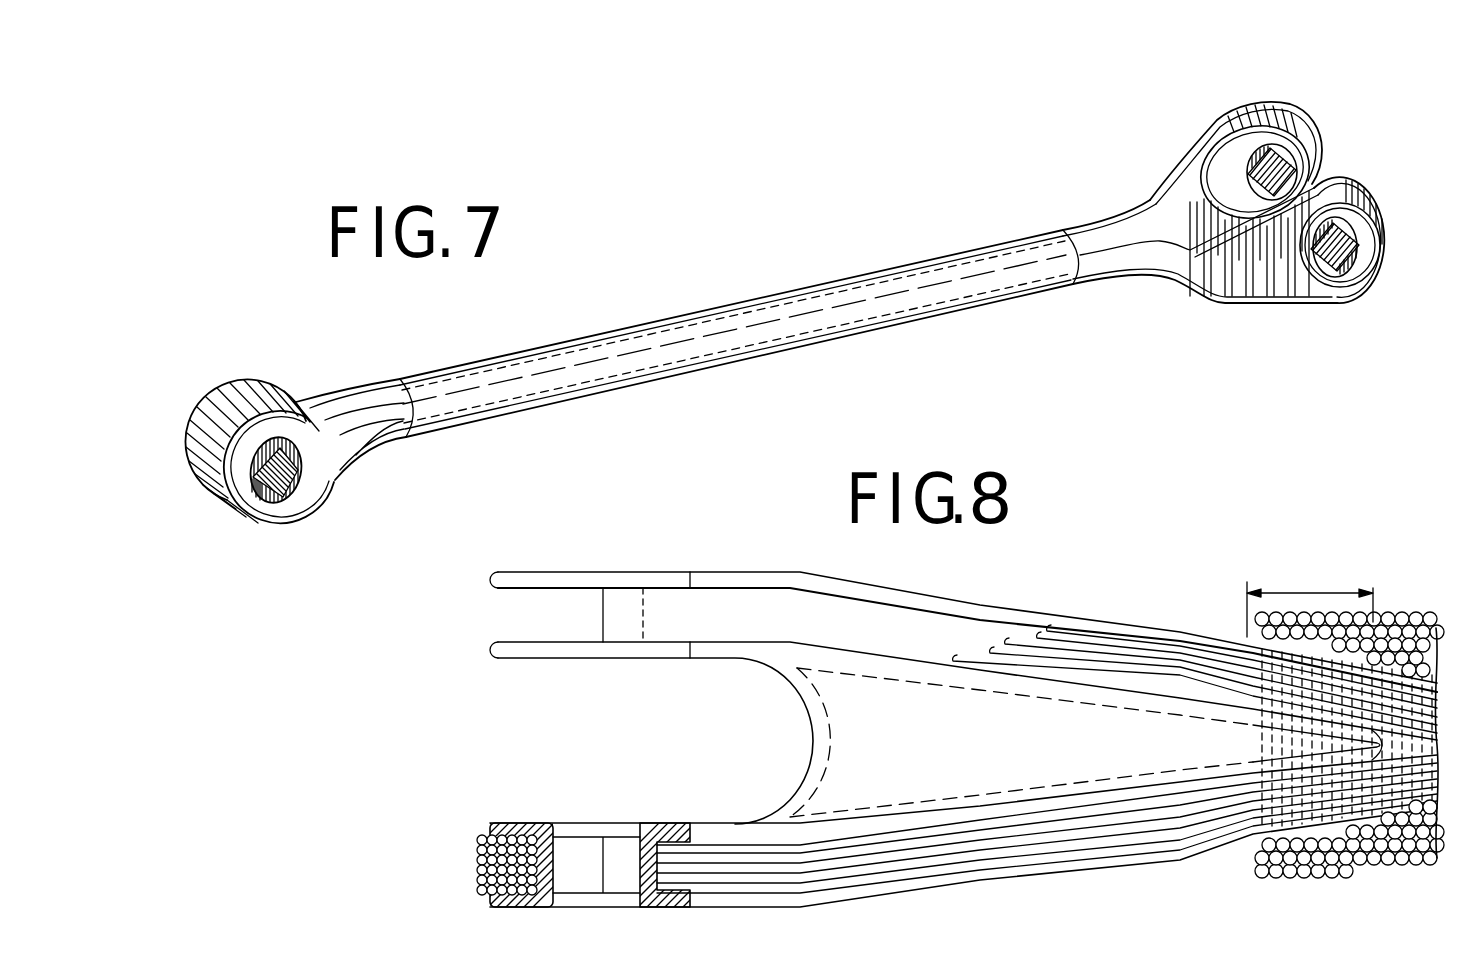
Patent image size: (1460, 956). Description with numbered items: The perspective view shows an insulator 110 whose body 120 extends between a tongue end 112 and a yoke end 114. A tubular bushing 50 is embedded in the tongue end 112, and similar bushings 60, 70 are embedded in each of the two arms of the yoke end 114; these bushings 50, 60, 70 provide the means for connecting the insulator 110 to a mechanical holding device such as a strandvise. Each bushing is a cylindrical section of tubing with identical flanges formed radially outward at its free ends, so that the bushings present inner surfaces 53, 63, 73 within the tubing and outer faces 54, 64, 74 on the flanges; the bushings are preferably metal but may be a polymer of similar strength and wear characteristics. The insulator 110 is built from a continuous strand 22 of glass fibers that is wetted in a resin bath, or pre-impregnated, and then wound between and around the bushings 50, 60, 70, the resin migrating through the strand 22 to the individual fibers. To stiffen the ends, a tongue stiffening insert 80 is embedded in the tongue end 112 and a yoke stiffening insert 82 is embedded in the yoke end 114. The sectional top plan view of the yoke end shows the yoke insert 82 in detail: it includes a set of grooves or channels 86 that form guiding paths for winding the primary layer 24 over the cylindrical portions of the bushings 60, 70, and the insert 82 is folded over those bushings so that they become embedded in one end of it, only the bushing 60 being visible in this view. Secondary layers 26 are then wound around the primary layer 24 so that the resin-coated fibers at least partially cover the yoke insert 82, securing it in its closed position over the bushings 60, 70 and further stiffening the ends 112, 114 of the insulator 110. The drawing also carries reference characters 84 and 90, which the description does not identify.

In FIG. 7, the insulator 110 is at (636, 292).
In FIG. 7, the tongue end 112 is at (213, 451).
In FIG. 7, the yoke end 114 is at (1296, 196).
In FIG. 7, the tongue stiffening insert 80 is at (355, 380).
In FIG. 7, the yoke stiffening insert 82 is at (1127, 194).
In FIG. 8, the yoke stiffening insert 82 is at (921, 740).
In FIG. 7, the shaft 84 is at (739, 347).
In FIG. 7, the body 120 is at (742, 288).
In FIG. 7, the bushing 50 is at (290, 439).
In FIG. 7, the inner surface 53 is at (266, 494).
In FIG. 7, the outer face 54 is at (280, 440).
In FIG. 7, the bushing 60 is at (1371, 257).
In FIG. 8, the bushing 60 is at (545, 905).
In FIG. 7, the inner surface 63 is at (1348, 233).
In FIG. 7, the outer face 64 is at (1326, 278).
In FIG. 7, the bushing 70 is at (1247, 143).
In FIG. 7, the inner surface 73 is at (1290, 168).
In FIG. 7, the outer face 74 is at (1270, 146).
In FIG. 8, the continuous strand 22 is at (815, 860).
In FIG. 8, the primary layer 24 is at (1112, 655).
In FIG. 8, the secondary layer 26 is at (1415, 632).
In FIG. 8, the channels 86 is at (790, 628).
In FIG. 8, the tab end 90 is at (492, 578).